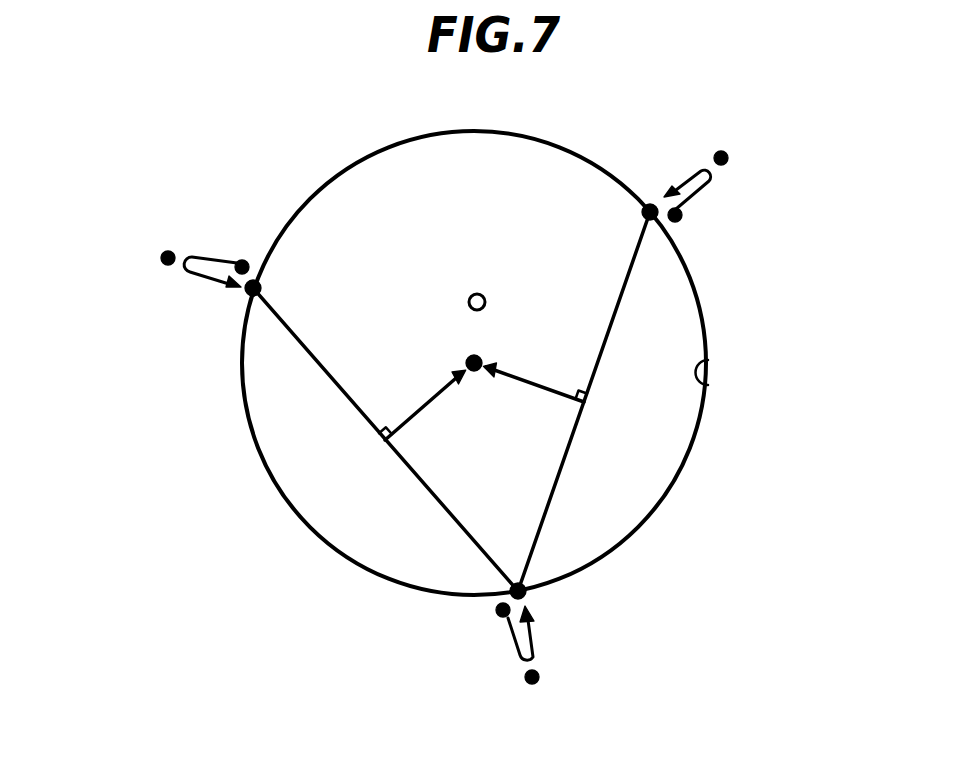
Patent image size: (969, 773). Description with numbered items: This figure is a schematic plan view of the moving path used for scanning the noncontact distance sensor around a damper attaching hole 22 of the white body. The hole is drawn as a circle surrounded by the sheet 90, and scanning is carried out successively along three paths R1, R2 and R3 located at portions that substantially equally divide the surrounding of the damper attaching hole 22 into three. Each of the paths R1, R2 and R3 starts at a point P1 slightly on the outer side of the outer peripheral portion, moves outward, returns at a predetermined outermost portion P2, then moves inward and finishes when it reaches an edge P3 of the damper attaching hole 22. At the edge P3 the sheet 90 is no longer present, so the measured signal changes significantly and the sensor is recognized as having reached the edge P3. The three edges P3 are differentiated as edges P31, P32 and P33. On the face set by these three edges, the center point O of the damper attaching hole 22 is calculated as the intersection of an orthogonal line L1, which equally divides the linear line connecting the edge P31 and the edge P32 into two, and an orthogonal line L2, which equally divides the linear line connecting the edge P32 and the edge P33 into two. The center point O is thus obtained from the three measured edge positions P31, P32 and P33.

The damper attaching hole 22 is at (712, 382).
The sheet 90 is at (698, 492).
The center point O is at (474, 352).
The orthogonal line L1 is at (525, 381).
The orthogonal line L2 is at (427, 401).
The point P1 is at (243, 260).
The outermost portion P2 is at (161, 258).
The edge P3 is at (423, 383).
The edge P31 is at (650, 204).
The edge P32 is at (525, 594).
The edge P33 is at (247, 294).
The path R1 is at (695, 197).
The path R2 is at (508, 633).
The path R3 is at (218, 258).